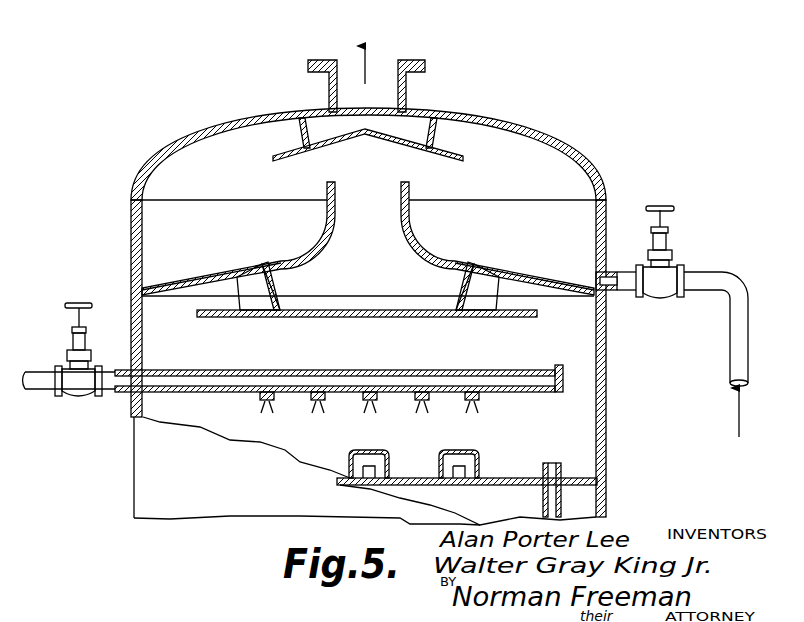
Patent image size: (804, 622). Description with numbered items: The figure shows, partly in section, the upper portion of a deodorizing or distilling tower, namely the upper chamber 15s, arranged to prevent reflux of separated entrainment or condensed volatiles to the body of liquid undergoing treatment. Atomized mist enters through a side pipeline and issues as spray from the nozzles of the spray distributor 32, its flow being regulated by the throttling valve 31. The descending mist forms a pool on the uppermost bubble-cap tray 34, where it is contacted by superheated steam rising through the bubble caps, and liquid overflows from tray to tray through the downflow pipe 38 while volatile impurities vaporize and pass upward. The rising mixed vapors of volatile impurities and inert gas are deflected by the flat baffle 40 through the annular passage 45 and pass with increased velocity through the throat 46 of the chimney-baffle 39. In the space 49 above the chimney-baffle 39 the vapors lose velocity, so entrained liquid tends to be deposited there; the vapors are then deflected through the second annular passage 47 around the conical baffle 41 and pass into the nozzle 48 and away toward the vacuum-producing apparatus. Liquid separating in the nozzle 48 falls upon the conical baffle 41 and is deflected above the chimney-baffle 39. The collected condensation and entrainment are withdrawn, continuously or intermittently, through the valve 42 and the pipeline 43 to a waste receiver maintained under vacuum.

The upper chamber 15s is at (608, 423).
The nozzle 48 is at (410, 92).
The second annular passage 47 is at (300, 120).
The conical baffle 41 is at (322, 161).
The throat 46 is at (368, 239).
The chimney-baffle 39 is at (455, 264).
The annular passage 45 is at (188, 301).
The space 49 is at (384, 238).
The flat baffle 40 is at (390, 318).
The spray distributor 32 is at (470, 369).
The throttling valve 31 is at (58, 367).
The valve 42 is at (684, 265).
The pipeline 43 is at (750, 348).
The bubble-cap tray 34 is at (518, 475).
The downflow pipe 38 is at (543, 497).